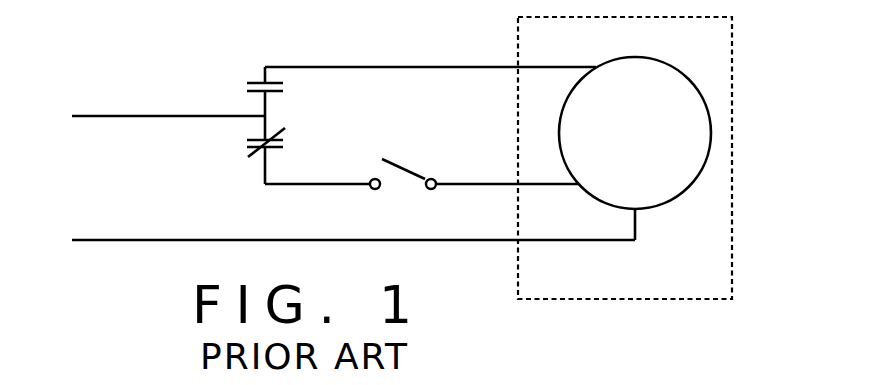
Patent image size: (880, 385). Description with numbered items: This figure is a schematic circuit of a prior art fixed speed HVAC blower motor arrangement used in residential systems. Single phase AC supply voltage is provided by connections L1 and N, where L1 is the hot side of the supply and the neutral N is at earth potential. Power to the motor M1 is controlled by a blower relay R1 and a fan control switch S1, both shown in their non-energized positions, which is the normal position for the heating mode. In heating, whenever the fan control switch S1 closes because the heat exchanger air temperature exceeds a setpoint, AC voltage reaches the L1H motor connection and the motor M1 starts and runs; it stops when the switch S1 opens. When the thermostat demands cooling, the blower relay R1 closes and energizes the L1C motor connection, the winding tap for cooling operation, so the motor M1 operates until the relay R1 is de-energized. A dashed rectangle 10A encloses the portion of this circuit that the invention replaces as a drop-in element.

The rectangle 10A is at (619, 311).
The hot supply connection L1 is at (150, 117).
The cooling motor connection L1C is at (430, 50).
The heating motor connection L1H is at (507, 169).
The neutral N is at (342, 238).
The blower relay R1 is at (284, 125).
The fan control switch S1 is at (350, 161).
The motor M1 is at (635, 148).